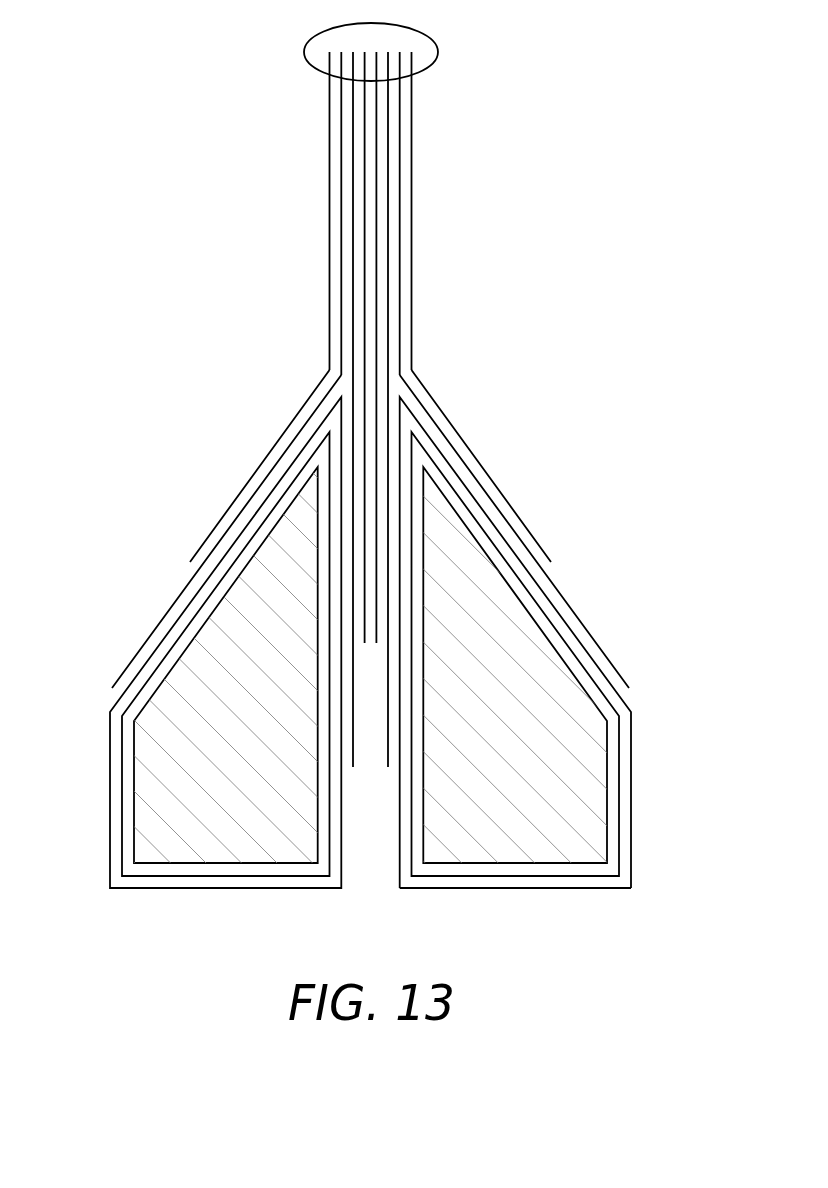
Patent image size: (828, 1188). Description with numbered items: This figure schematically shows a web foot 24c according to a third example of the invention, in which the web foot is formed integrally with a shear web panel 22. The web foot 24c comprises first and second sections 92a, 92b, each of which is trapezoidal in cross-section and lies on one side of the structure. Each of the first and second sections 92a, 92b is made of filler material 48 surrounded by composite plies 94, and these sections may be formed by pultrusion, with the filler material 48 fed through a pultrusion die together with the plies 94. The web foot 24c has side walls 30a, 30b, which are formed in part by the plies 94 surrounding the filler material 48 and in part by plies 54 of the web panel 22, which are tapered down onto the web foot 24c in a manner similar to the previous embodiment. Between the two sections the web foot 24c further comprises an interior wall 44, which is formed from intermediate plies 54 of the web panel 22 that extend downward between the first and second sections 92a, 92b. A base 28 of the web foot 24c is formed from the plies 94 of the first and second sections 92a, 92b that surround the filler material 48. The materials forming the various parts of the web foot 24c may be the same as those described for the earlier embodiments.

The plies of web panel 54 is at (305, 50).
The web panel 22 is at (440, 194).
The web foot 24c is at (161, 346).
The side wall 30a is at (199, 647).
The side wall 30b is at (372, 666).
The interior wall 44 is at (418, 516).
The filler material 48 is at (152, 748).
The composite plies 94 is at (110, 837).
The first section 92a is at (167, 842).
The second section 92b is at (575, 843).
The base 28 is at (467, 888).